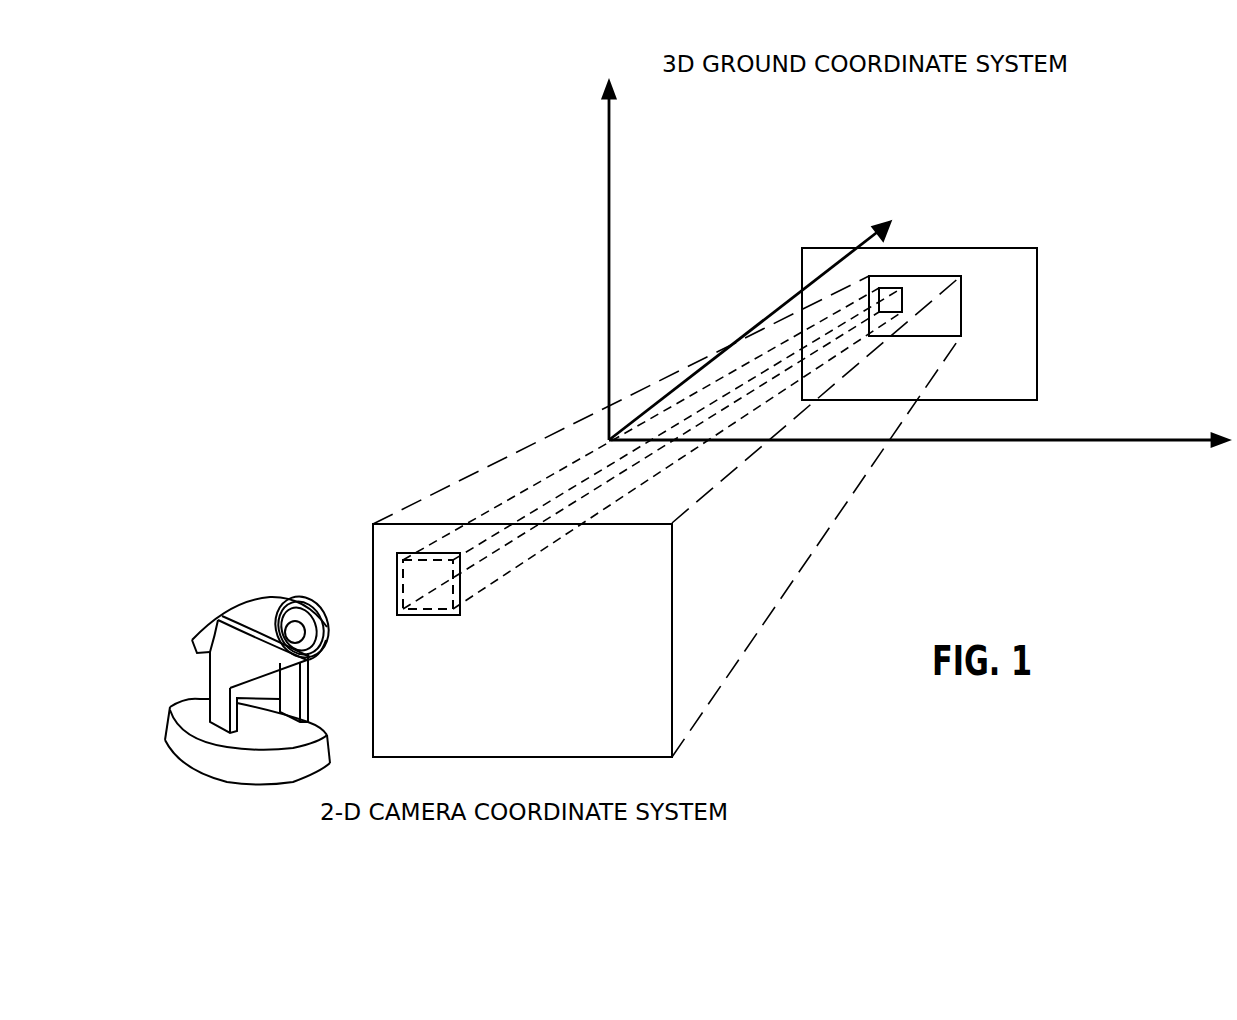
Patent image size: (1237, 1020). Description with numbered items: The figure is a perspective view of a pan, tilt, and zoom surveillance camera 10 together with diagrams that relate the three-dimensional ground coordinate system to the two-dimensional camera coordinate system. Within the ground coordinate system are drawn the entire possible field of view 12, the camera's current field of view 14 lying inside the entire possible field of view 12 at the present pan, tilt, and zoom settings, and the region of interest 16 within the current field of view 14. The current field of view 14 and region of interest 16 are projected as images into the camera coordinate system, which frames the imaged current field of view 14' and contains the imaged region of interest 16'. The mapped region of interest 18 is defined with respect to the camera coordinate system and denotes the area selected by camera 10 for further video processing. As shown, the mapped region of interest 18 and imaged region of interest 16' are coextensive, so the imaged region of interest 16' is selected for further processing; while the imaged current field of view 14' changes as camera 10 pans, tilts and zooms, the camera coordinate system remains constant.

The PTZ surveillance camera 10 is at (290, 595).
The entire possible field of view 12 is at (1002, 248).
The current field of view 14 is at (946, 306).
The region of interest 16 is at (914, 261).
The imaged current field of view 14' is at (557, 640).
The imaged region of interest 16' is at (455, 608).
The mapped region of interest 18 is at (428, 617).